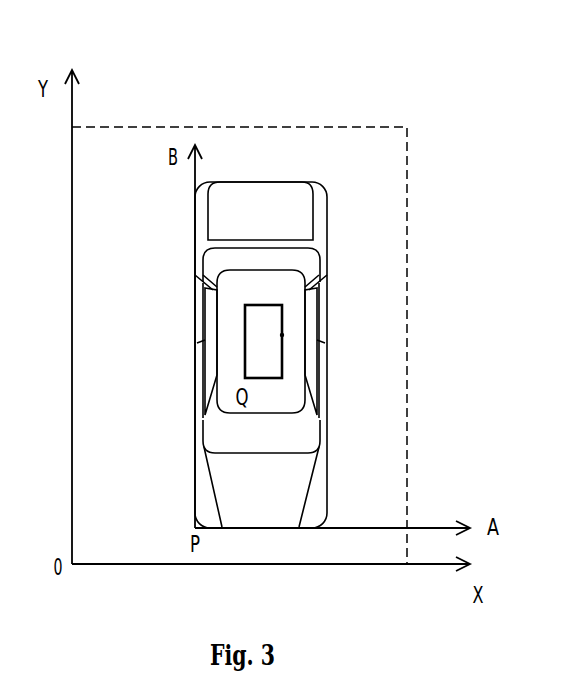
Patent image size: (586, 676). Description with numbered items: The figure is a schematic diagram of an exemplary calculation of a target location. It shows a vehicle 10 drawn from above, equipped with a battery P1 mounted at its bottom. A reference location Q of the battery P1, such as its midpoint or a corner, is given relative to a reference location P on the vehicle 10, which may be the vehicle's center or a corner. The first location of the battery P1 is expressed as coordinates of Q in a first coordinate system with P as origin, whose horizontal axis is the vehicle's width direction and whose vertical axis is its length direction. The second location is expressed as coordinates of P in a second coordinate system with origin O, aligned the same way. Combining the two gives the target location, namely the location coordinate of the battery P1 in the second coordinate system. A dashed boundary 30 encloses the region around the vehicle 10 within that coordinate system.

The vehicle 10 is at (277, 182).
The parking area boundary 30 is at (407, 210).
The battery P1 is at (282, 335).